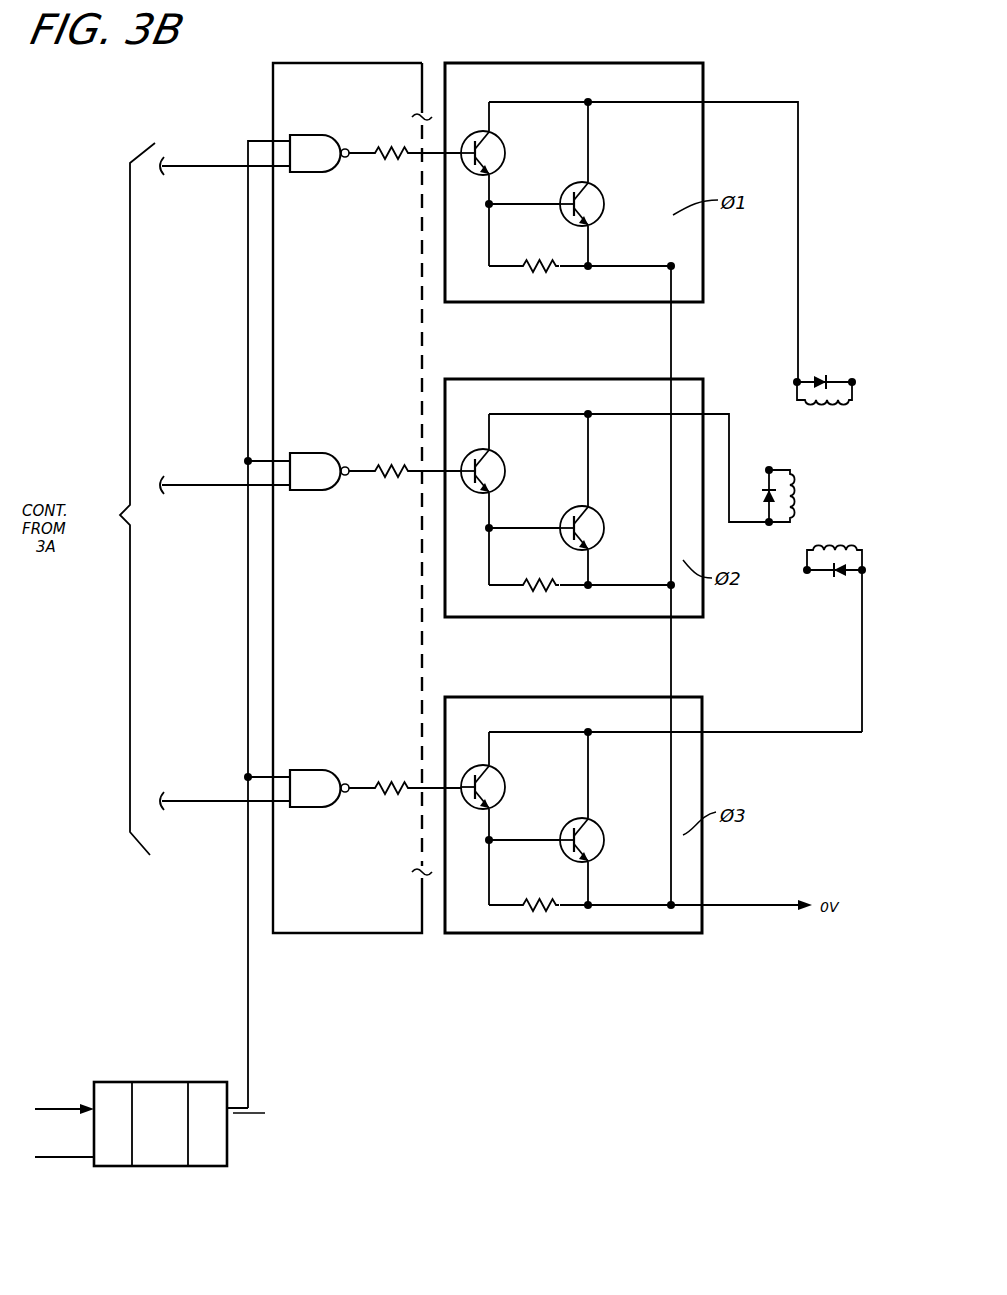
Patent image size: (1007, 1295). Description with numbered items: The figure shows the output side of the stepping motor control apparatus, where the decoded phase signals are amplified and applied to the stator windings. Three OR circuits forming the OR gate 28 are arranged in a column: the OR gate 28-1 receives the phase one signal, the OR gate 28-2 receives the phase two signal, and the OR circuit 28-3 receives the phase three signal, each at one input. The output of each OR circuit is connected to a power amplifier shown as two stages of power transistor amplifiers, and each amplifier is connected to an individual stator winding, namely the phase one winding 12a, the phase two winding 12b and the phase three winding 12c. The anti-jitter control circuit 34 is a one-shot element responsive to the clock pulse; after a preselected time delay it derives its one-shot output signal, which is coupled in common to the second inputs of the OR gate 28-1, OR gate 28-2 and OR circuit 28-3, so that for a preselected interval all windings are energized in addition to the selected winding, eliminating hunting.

The OR gate 28 is at (368, 75).
The OR gate 28-1 is at (320, 163).
The OR gate 28-2 is at (320, 481).
The OR circuit 28-3 is at (320, 798).
The phase 1 winding 12a is at (791, 490).
The phase 2 winding 12b is at (817, 410).
The phase 3 winding 12c is at (828, 550).
The anti-jitter control circuit 34 is at (220, 1155).